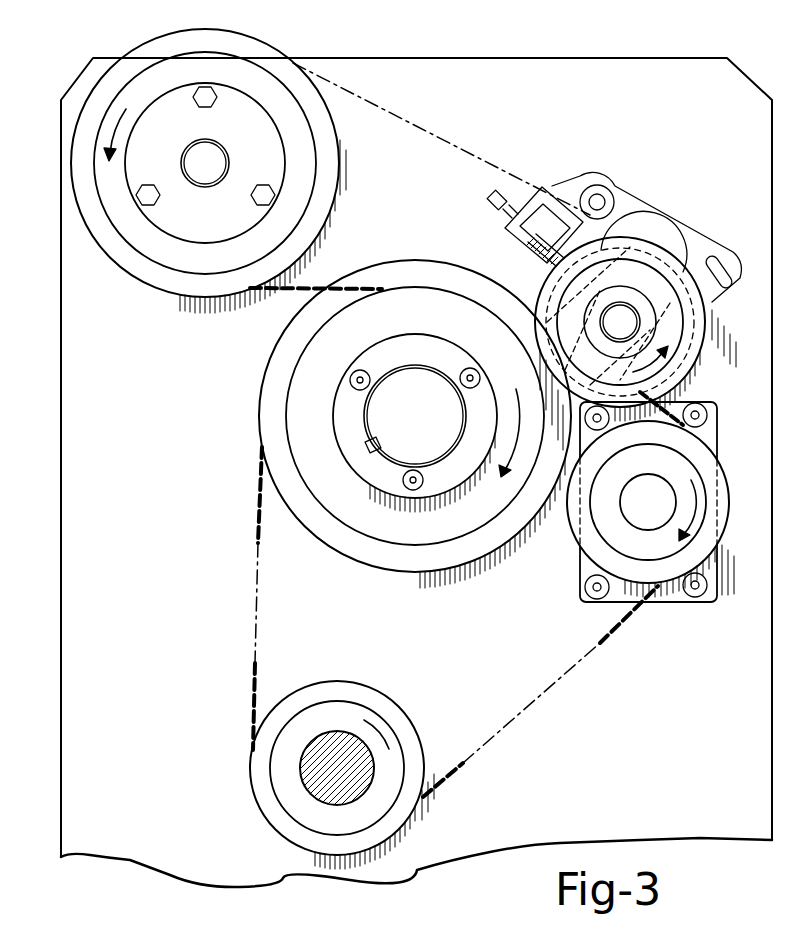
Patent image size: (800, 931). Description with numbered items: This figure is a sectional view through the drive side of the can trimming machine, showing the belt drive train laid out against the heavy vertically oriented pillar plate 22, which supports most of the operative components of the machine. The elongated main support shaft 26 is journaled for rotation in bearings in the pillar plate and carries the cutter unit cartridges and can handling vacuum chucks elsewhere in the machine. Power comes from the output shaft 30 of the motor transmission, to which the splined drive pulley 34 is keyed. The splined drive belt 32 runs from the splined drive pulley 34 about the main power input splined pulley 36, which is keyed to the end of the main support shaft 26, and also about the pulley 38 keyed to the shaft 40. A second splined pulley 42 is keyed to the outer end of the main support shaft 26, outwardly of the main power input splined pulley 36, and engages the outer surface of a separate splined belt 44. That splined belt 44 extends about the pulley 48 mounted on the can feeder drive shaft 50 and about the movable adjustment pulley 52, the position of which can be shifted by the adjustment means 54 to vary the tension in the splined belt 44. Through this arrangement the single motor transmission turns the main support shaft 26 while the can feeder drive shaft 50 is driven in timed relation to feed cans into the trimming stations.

The pillar plate 22 is at (416, 472).
The main support shaft 26 is at (415, 427).
The output shaft 30 is at (353, 737).
The splined drive belt 32 is at (250, 697).
The splined drive pulley 34 is at (287, 830).
The main power input splined pulley 36 is at (397, 563).
The pulley 38 is at (650, 502).
The shaft 40 is at (657, 480).
The second splined pulley 42 is at (437, 540).
The splined belt 44 is at (280, 297).
The pulley 48 is at (160, 277).
The can feeder drive shaft 50 is at (213, 153).
The movable adjustment pulley 52 is at (688, 362).
The adjustment means 54 is at (490, 207).